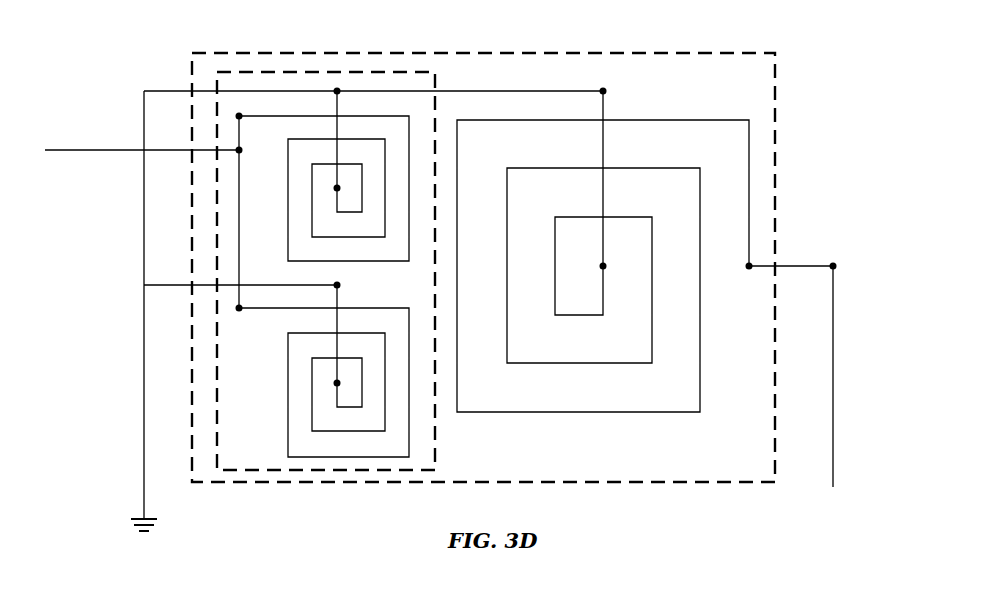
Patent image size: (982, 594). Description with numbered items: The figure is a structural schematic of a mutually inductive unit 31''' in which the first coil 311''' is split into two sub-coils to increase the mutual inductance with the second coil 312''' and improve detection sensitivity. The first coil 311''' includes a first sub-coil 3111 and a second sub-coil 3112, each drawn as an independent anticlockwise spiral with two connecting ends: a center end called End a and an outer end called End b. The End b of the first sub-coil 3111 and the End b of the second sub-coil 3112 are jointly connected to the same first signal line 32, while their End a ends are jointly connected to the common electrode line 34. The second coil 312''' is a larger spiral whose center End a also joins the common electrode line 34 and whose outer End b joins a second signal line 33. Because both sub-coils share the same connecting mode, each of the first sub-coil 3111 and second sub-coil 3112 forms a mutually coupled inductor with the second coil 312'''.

The mutually inductive unit 31''' is at (483, 250).
The first coil 311''' is at (369, 271).
The first sub-coil 3111 is at (288, 203).
The second sub-coil 3112 is at (288, 408).
The second coil 312''' is at (605, 240).
The first signal line 32 is at (68, 150).
The second signal line 33 is at (833, 378).
The common electrode line 34 is at (144, 225).